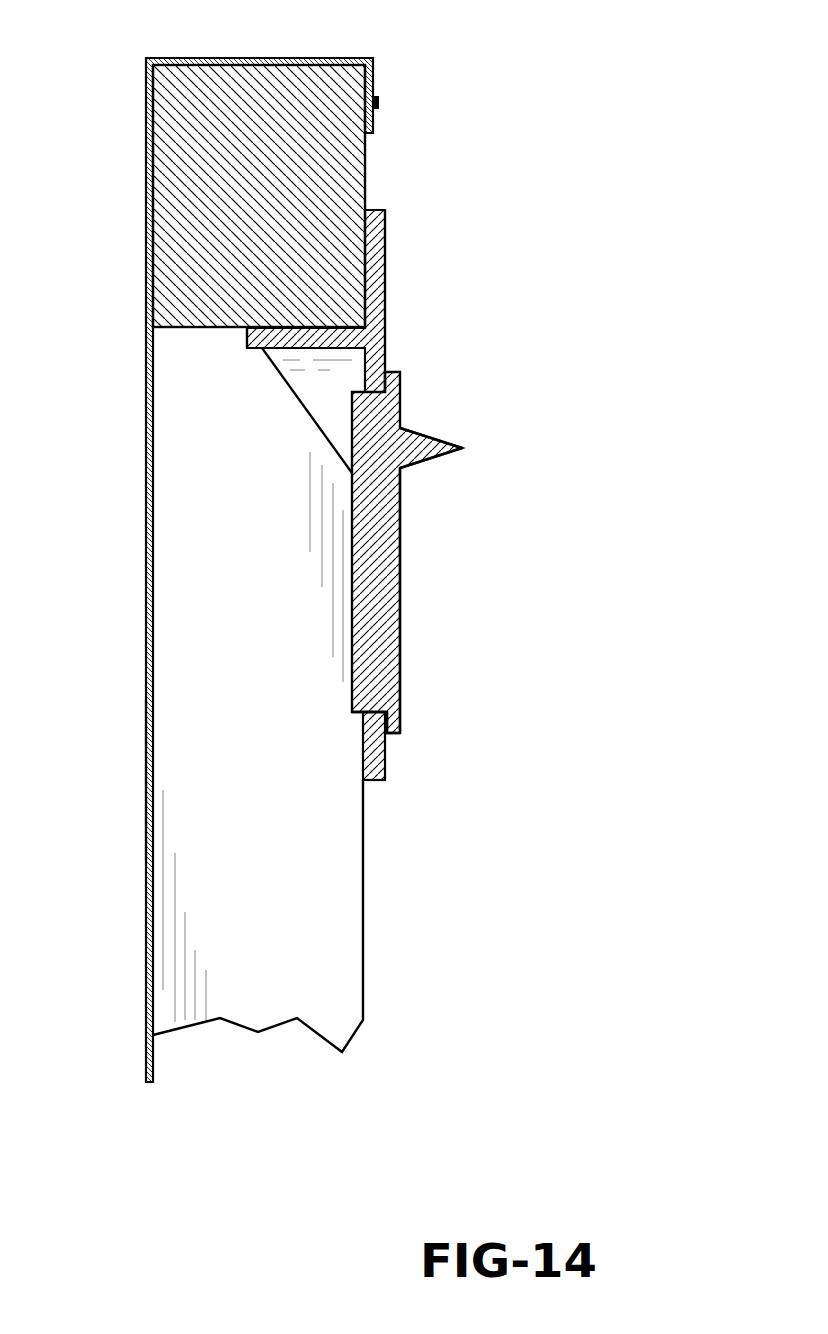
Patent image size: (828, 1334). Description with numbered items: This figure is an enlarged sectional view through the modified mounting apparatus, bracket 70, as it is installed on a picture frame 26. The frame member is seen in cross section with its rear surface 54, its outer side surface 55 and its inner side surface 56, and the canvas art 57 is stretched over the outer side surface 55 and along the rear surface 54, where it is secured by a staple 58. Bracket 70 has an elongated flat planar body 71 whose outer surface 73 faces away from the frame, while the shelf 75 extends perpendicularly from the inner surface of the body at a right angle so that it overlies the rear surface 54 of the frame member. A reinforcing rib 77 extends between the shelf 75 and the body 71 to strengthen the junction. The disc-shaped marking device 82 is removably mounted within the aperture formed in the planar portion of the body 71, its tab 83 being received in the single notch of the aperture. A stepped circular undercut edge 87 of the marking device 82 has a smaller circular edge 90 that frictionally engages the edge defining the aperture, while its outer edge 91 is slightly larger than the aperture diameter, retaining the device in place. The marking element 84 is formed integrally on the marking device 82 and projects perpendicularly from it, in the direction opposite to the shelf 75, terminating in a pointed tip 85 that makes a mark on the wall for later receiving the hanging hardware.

The picture frame 26 is at (132, 778).
The rear surface 54 is at (367, 152).
The outer side surface 55 is at (222, 62).
The inner side surface 56 is at (342, 858).
The canvas art 57 is at (146, 413).
The staple 58 is at (380, 103).
The bracket 70 is at (560, 327).
The body 71 is at (394, 775).
The outer surface 73 is at (385, 240).
The shelf 75 is at (315, 335).
The reinforcing rib 77 is at (317, 415).
The marking device 82 is at (416, 515).
The tab 83 is at (400, 634).
The marking element 84 is at (417, 430).
The tip 85 is at (462, 448).
The stepped circular undercut edge 87 is at (373, 388).
The smaller circular edge 90 is at (358, 713).
The outer edge 91 is at (396, 734).